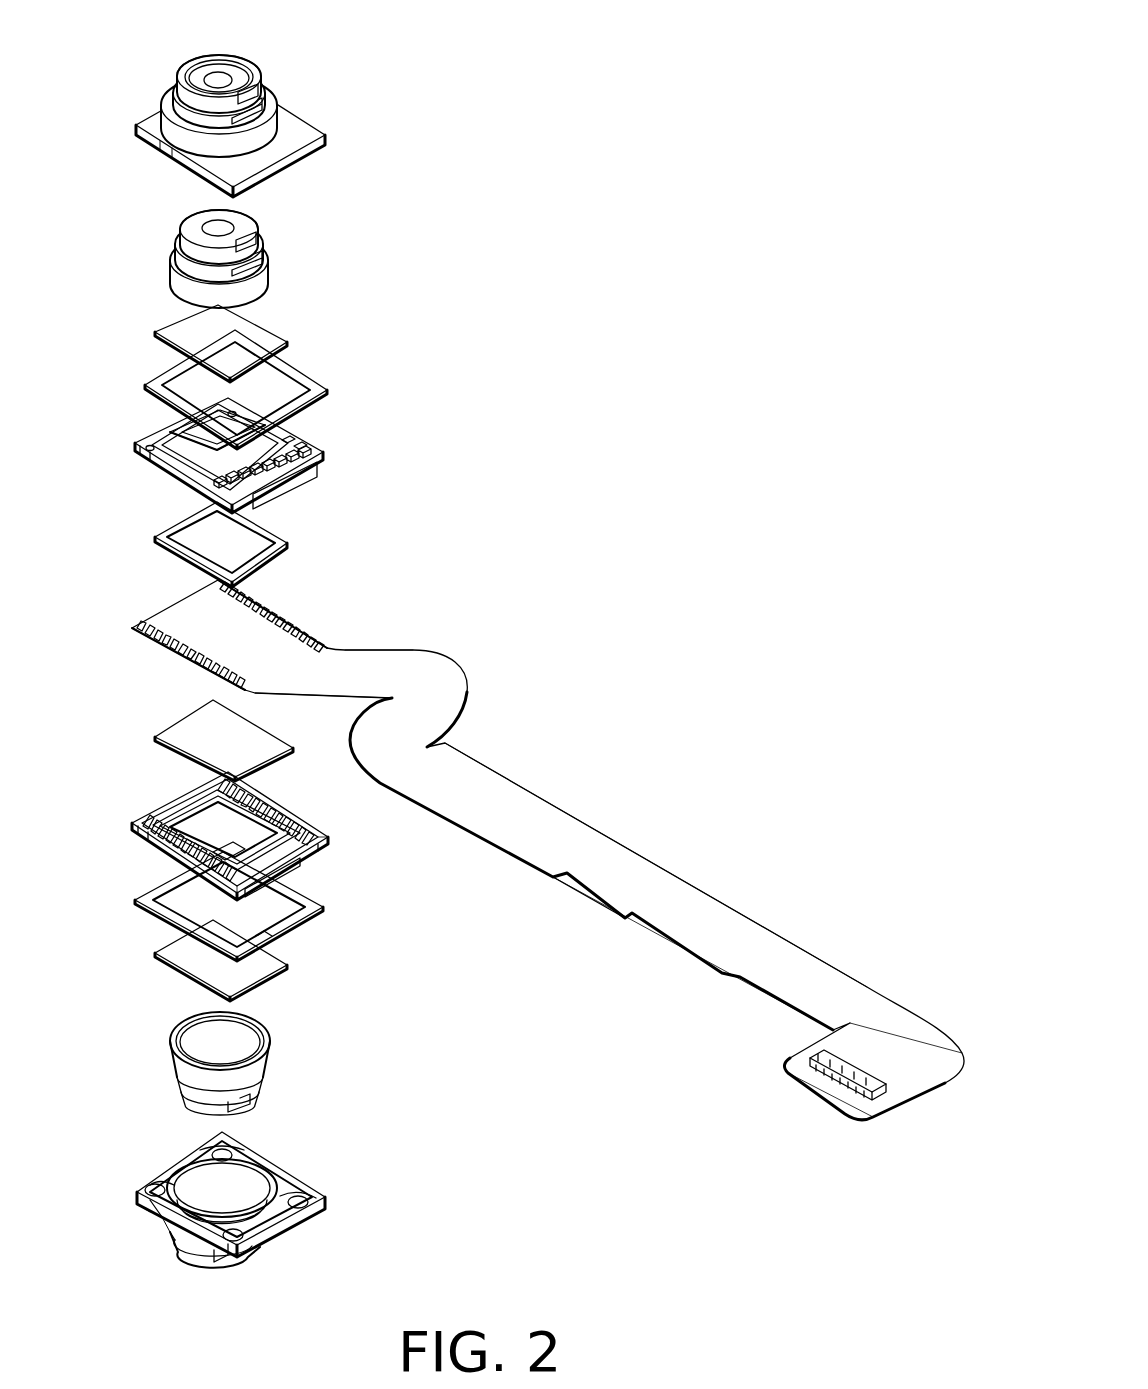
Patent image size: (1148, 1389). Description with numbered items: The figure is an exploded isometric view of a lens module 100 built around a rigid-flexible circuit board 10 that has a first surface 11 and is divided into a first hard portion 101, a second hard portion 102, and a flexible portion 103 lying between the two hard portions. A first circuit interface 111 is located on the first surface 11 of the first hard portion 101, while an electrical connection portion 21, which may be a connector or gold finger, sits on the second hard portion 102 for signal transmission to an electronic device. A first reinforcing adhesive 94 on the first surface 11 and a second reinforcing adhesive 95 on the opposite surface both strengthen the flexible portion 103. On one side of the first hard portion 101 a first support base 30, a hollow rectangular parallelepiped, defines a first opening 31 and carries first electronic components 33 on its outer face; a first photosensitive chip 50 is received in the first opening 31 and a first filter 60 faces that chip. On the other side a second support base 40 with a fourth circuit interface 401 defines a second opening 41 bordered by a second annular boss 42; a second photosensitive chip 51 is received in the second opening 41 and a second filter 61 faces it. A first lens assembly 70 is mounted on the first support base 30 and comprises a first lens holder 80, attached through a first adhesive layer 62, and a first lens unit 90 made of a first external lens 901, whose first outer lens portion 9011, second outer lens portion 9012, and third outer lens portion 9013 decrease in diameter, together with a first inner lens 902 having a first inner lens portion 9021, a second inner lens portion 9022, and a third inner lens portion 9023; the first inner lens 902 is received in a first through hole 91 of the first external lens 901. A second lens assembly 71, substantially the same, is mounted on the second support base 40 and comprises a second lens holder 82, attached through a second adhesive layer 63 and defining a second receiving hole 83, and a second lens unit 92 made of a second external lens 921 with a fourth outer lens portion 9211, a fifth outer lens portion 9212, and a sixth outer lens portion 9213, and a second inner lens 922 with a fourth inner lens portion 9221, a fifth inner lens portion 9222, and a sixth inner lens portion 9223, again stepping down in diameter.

The lens module 100 is at (617, 27).
The circuit board 10 is at (745, 608).
The first hard portion 101 is at (218, 628).
The second hard portion 102 is at (898, 1045).
The flexible portion 103 is at (543, 833).
The first surface 11 is at (188, 612).
The first circuit interface 111 is at (148, 628).
The electrical connection portion 21 is at (902, 1098).
The first support base 30 is at (313, 462).
The first opening 31 is at (184, 449).
The first electronic components 33 is at (307, 442).
The first reinforcing adhesive 94 is at (278, 493).
The second support base 40 is at (137, 823).
The second opening 41 is at (210, 836).
The fourth circuit interface 401 is at (273, 805).
The second annular boss 42 is at (305, 827).
The second reinforcing adhesive 95 is at (273, 860).
The first photosensitive chip 50 is at (273, 545).
The second photosensitive chip 51 is at (183, 728).
The first filter 60 is at (262, 338).
The second filter 61 is at (187, 953).
The first adhesive layer 62 is at (333, 390).
The second adhesive layer 63 is at (140, 898).
The first lens assembly 70 is at (105, 225).
The second lens assembly 71 is at (122, 1065).
The first lens holder 80 is at (193, 172).
The second lens holder 82 is at (148, 1208).
The second receiving hole 83 is at (199, 1183).
The first lens unit 90 is at (490, 98).
The first external lens 901 is at (420, 63).
The first outer lens portion 9011 is at (208, 150).
The second outer lens portion 9012 is at (220, 125).
The third outer lens portion 9013 is at (236, 92).
The first inner lens 902 is at (420, 213).
The first inner lens portion 9021 is at (208, 300).
The second inner lens portion 9022 is at (220, 272).
The third inner lens portion 9023 is at (228, 250).
The first through hole 91 is at (228, 72).
The second lens unit 92 is at (503, 1062).
The second external lens 921 is at (425, 1175).
The fourth outer lens portion 9211 is at (285, 1195).
The fifth outer lens portion 9212 is at (300, 1215).
The sixth outer lens portion 9213 is at (212, 1267).
The second inner lens 922 is at (425, 1028).
The fourth inner lens portion 9221 is at (275, 1053).
The fifth inner lens portion 9222 is at (233, 1077).
The sixth inner lens portion 9223 is at (215, 1108).